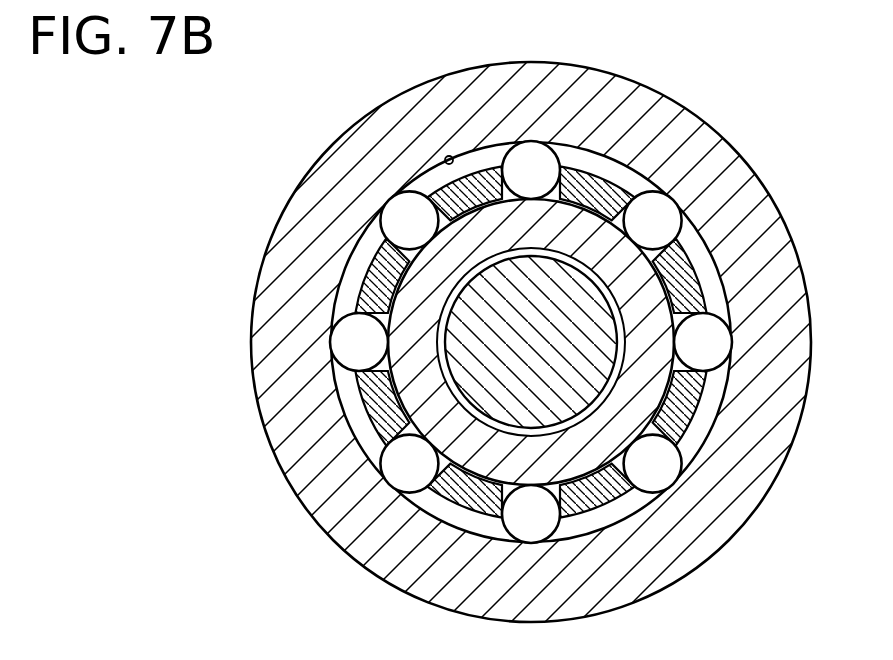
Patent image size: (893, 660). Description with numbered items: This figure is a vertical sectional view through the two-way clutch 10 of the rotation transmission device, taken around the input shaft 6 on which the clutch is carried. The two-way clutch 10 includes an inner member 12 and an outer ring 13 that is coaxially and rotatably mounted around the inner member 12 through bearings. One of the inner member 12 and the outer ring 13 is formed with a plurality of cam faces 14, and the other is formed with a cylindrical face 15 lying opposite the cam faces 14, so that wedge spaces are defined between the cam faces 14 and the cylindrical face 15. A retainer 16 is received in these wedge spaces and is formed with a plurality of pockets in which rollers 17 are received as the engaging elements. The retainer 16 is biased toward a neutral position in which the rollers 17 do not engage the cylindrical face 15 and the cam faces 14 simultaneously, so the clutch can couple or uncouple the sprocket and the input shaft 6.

The input shaft 6 is at (580, 377).
The two-way clutch 10 is at (730, 135).
The inner member 12 is at (293, 480).
The outer ring 13 is at (602, 95).
The cam faces 14 is at (402, 385).
The cylindrical face 15 is at (445, 158).
The retainer 16 is at (377, 277).
The rollers 17 is at (398, 212).